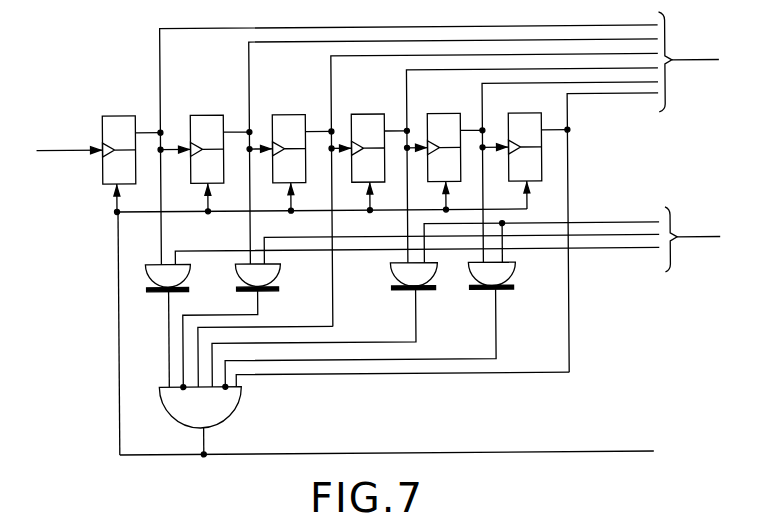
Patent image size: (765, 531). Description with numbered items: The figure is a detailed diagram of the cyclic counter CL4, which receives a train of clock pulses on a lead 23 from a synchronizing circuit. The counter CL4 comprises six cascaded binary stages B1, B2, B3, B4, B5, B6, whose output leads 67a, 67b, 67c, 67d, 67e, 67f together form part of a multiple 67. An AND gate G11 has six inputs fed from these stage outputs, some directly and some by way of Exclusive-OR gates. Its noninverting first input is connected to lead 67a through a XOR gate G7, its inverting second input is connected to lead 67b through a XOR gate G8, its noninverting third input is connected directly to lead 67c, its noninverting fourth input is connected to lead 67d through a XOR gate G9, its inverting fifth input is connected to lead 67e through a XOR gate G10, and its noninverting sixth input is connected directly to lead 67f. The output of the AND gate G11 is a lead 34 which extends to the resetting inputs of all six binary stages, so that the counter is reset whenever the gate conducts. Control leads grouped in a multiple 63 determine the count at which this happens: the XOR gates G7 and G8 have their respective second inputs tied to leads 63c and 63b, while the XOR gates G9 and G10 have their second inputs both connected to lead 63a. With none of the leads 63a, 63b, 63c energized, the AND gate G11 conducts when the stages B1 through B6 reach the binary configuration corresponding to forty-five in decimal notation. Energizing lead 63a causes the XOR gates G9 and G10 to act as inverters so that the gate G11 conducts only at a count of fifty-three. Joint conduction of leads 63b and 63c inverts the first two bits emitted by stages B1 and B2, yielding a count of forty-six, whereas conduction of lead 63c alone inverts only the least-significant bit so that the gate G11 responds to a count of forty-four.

The cyclic counter CL4 is at (89, 95).
The lead 23 is at (70, 147).
The binary stage B1 is at (110, 167).
The binary stage B2 is at (192, 165).
The binary stage B3 is at (277, 166).
The binary stage B4 is at (357, 162).
The binary stage B5 is at (432, 164).
The binary stage B6 is at (541, 170).
The multiple 67 is at (698, 62).
The output lead 67a is at (163, 62).
The output lead 67b is at (252, 70).
The output lead 67c is at (333, 74).
The output lead 67d is at (408, 88).
The output lead 67e is at (484, 99).
The output lead 67f is at (612, 97).
The multiple 63 is at (695, 237).
The lead 63a is at (619, 226).
The lead 63b is at (607, 241).
The lead 63c is at (640, 252).
The Exclusive-OR gate G7 is at (189, 272).
The Exclusive-OR gate G8 is at (281, 274).
The Exclusive-OR gate G9 is at (392, 273).
The Exclusive-OR gate G10 is at (516, 272).
The AND gate G11 is at (217, 414).
The lead 34 is at (384, 455).